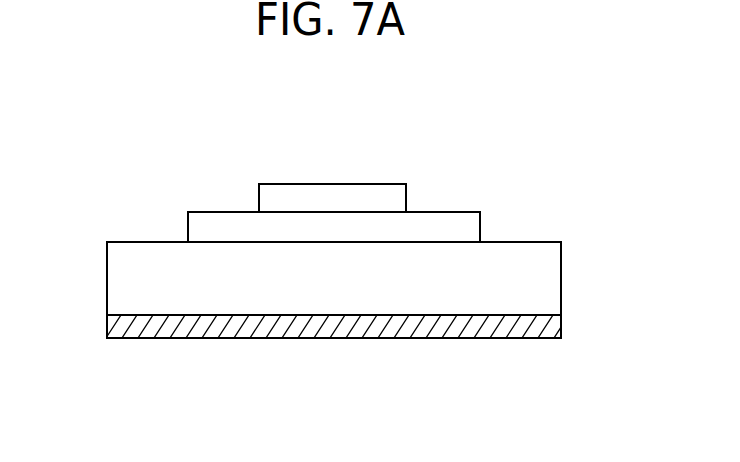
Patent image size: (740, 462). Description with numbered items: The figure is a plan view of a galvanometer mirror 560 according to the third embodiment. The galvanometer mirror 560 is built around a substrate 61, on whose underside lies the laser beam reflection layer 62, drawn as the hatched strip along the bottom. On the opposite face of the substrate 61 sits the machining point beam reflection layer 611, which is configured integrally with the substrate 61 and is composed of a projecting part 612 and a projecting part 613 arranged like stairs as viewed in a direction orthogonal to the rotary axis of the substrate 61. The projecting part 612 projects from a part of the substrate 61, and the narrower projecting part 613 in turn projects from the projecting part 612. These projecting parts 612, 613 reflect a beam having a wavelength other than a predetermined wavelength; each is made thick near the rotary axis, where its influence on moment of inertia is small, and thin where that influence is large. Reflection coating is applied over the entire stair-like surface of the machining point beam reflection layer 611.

The galvanometer mirror 560 is at (112, 178).
The substrate 61 is at (543, 280).
The laser beam reflection layer 62 is at (542, 337).
The machining point beam reflection layer 611 is at (515, 110).
The projecting part 612 is at (456, 223).
The projecting part 613 is at (389, 193).